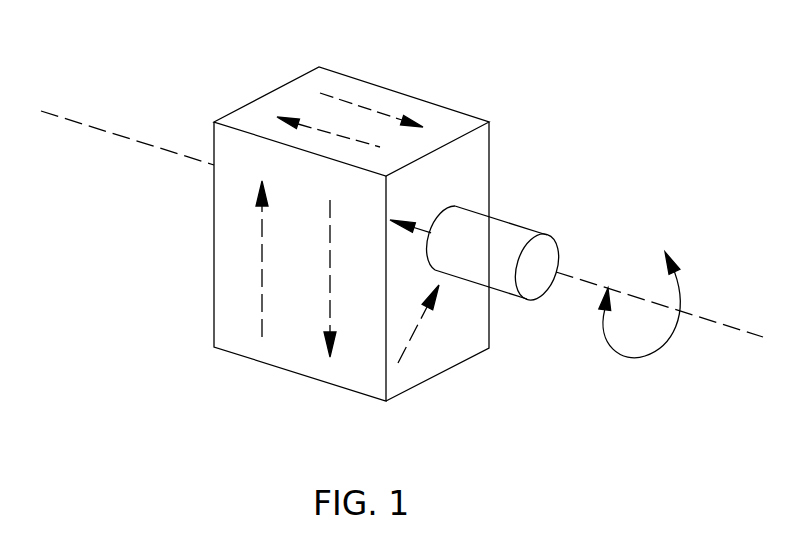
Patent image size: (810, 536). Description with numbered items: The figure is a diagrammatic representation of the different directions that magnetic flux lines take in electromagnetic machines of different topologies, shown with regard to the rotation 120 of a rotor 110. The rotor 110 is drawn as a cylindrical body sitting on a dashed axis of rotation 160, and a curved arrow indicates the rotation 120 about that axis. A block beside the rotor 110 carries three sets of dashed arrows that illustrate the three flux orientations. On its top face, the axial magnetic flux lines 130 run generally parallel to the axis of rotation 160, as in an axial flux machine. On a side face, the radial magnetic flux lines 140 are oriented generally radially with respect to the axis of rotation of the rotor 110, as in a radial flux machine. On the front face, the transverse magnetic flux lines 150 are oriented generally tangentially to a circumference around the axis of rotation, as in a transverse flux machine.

The rotor 110 is at (520, 220).
The rotation 120 is at (683, 288).
The axial magnetic flux lines 130 is at (342, 110).
The radial magnetic flux lines 140 is at (405, 363).
The transverse magnetic flux lines 150 is at (255, 277).
The axis of rotation 160 is at (730, 327).